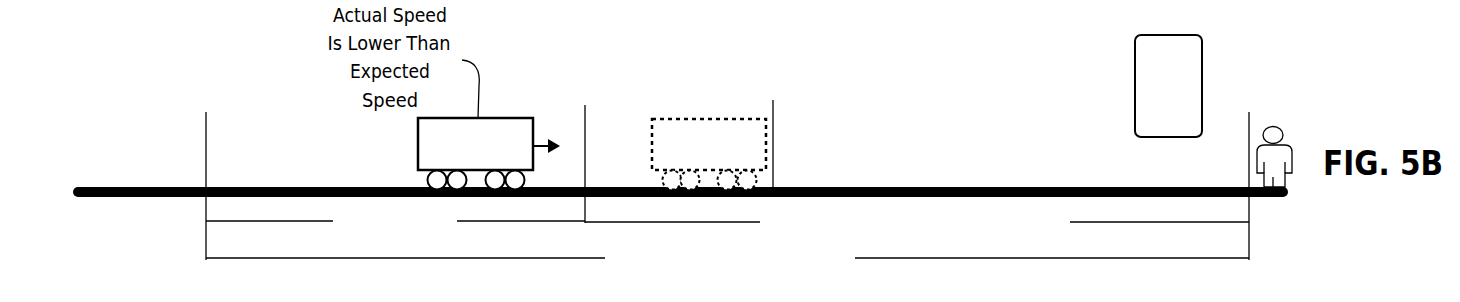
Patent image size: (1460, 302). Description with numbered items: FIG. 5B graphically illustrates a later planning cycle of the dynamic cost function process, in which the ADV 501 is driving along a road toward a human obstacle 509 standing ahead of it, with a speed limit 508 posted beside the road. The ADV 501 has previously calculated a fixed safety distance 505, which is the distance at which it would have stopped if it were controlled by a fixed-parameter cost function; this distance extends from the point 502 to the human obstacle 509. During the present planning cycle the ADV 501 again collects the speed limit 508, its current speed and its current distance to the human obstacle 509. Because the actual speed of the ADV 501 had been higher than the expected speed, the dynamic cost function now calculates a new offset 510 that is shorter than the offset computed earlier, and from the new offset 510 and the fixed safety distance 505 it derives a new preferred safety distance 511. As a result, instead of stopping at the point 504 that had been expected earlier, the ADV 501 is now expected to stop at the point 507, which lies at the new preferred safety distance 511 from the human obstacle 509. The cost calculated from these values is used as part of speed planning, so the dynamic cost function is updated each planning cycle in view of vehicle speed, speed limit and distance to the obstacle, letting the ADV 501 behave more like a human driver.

The ADV 501 is at (461, 154).
The point 502 is at (189, 104).
The point 504 is at (756, 97).
The fixed safety distance 505 is at (853, 267).
The point 507 is at (568, 101).
The speed limit 508 is at (1143, 32).
The human obstacle 509 is at (1233, 104).
The new offset 510 is at (455, 231).
The new preferred safety distance 511 is at (1068, 232).